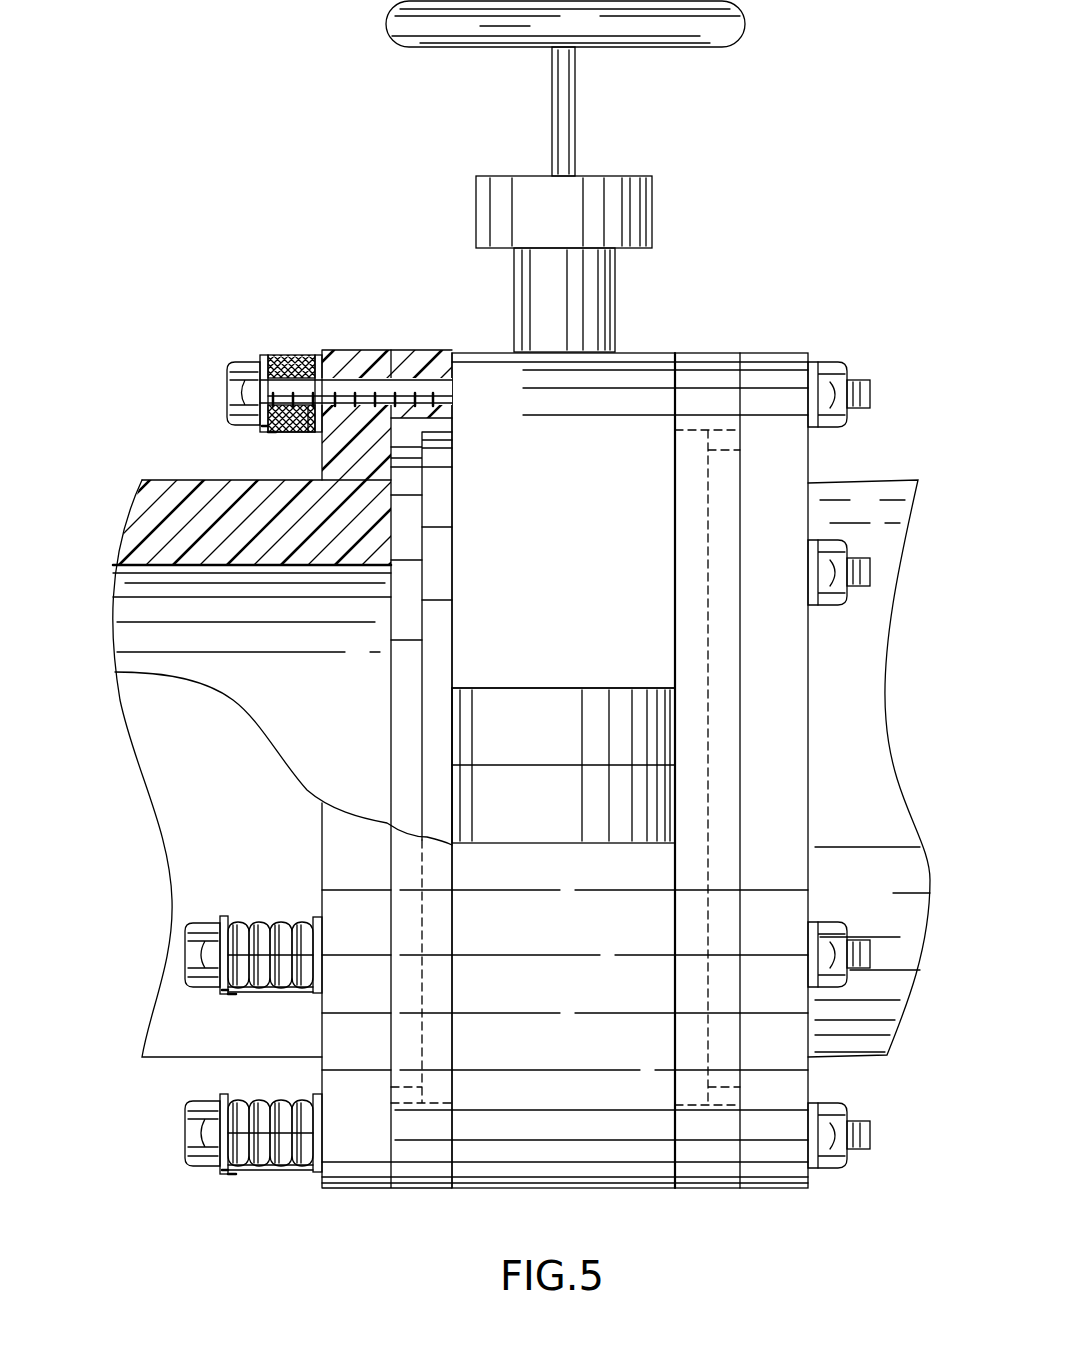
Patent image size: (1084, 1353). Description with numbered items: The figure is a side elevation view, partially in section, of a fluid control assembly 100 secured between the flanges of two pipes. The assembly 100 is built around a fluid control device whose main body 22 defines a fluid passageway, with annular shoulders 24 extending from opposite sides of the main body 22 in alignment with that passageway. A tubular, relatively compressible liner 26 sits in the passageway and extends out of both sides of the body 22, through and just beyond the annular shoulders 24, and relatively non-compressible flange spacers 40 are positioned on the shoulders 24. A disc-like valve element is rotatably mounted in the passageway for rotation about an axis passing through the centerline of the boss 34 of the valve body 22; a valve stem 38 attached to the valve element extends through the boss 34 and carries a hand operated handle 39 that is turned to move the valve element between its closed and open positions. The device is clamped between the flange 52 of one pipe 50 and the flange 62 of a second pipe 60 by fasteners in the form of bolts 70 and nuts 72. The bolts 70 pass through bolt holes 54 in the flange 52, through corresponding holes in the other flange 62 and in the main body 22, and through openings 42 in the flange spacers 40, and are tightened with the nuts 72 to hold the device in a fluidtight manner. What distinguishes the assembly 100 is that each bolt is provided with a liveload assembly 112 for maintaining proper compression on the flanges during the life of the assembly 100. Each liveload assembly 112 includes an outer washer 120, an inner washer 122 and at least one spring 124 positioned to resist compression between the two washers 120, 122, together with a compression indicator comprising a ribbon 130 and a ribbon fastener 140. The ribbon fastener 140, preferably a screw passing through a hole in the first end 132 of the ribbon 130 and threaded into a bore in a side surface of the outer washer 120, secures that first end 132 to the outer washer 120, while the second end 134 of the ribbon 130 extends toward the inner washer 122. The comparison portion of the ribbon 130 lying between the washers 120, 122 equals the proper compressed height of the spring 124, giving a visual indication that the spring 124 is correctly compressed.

The main body 22 is at (643, 367).
The annular shoulders 24 is at (445, 668).
The liner 26 is at (440, 626).
The boss 34 is at (653, 216).
The valve stem 38 is at (577, 123).
The handle 39 is at (700, 34).
The flange spacers 40 is at (441, 356).
The openings 42 is at (448, 390).
The pipe 50 is at (190, 768).
The flange 52 is at (420, 418).
The bolt holes 54 is at (392, 452).
The pipe 60 is at (906, 470).
The flange 62 is at (800, 350).
The bolts 70 is at (843, 362).
The nuts 72 is at (232, 394).
The fluid control assembly 100 is at (758, 302).
The liveload assembly 112 is at (291, 347).
The outer washer 120 is at (263, 355).
The inner washer 122 is at (320, 352).
The spring 124 is at (300, 352).
The ribbon 130 is at (276, 442).
The first end 132 is at (262, 428).
The second end 134 is at (310, 432).
The ribbon fastener 140 is at (272, 433).